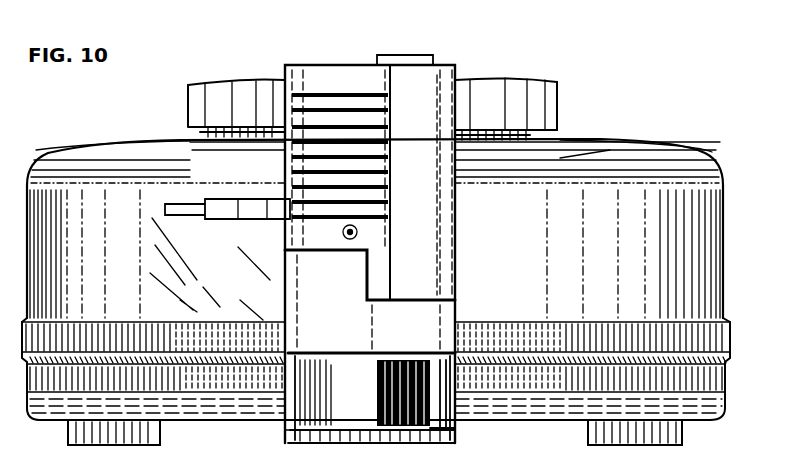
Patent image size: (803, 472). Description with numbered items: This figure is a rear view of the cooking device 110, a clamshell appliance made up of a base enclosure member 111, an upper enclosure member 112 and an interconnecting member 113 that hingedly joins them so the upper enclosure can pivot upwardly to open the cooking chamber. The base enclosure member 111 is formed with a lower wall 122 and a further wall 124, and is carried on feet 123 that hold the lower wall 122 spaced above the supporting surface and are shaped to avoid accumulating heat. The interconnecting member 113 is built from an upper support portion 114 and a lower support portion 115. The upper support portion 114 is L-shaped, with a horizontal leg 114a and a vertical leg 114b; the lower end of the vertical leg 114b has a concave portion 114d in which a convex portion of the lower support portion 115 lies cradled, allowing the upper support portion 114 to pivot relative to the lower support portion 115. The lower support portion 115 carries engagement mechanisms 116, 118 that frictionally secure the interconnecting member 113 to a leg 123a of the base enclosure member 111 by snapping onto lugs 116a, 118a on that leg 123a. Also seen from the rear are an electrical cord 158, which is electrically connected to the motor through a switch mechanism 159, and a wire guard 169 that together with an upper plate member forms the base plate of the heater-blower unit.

The cooking device 110 is at (610, 95).
The base enclosure member 111 is at (232, 391).
The upper enclosure member 112 is at (118, 147).
The interconnecting member 113 is at (510, 80).
The upper support portion 114 is at (348, 68).
The horizontal leg 114a is at (297, 62).
The vertical leg 114b is at (432, 252).
The concave portion 114d is at (290, 245).
The lower support portion 115 is at (350, 339).
The engagement mechanism 116 is at (458, 446).
The lug 116a is at (458, 438).
The engagement mechanism 118 is at (292, 446).
The lug 118a is at (285, 432).
The lower wall 122 is at (212, 430).
The feet 123 is at (160, 434).
The leg 123a is at (415, 432).
The wall 124 is at (250, 354).
The electrical cord 158 is at (172, 204).
The switch mechanism 159 is at (422, 55).
The wire guard 169 is at (556, 156).